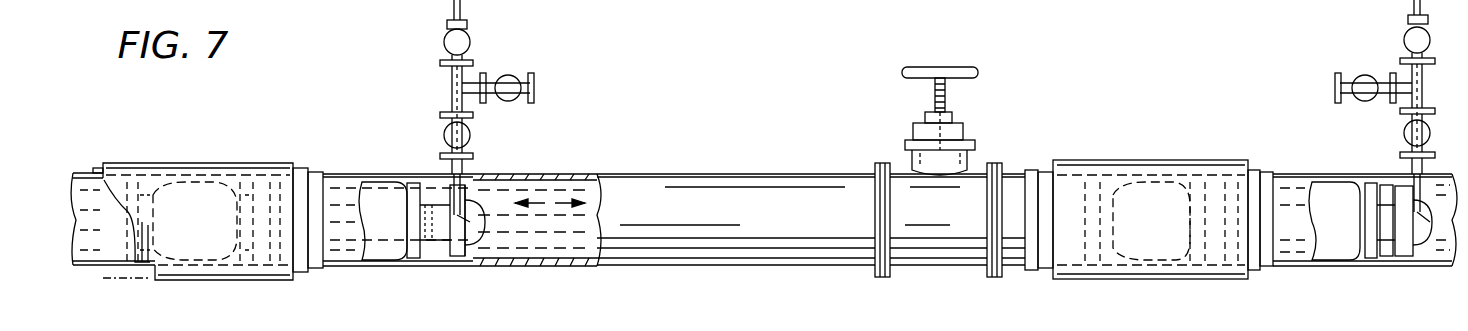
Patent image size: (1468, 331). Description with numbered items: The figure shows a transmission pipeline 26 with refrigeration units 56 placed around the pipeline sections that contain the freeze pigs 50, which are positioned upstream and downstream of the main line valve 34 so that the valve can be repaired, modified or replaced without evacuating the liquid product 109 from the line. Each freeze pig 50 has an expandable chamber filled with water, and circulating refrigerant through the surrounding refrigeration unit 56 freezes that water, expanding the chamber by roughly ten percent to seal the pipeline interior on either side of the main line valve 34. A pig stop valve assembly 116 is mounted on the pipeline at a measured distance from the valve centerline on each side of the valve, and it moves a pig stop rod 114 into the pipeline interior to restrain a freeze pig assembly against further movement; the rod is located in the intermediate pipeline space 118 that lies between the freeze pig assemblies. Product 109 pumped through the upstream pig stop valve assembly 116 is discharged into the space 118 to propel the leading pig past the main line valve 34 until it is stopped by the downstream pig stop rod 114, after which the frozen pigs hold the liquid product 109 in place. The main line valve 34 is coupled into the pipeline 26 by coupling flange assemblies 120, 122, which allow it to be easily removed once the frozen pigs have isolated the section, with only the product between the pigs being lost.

The transmission pipeline 26 is at (1296, 185).
The main line valve 34 is at (975, 115).
The freeze pig 50 is at (184, 225).
The refrigeration unit 56 is at (258, 160).
The liquid product 109 is at (515, 185).
The pig stop rod 114 is at (462, 195).
The pig stop valve assembly 116 is at (443, 88).
The intermediate pipeline space 118 is at (560, 200).
The coupling flange assembly 120 is at (875, 165).
The coupling flange assembly 122 is at (1000, 165).